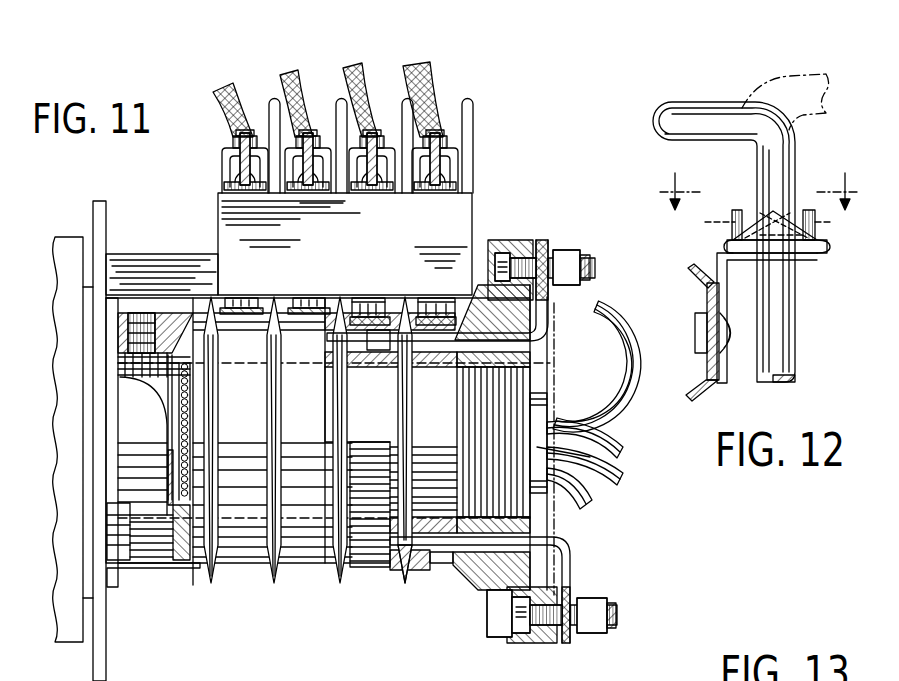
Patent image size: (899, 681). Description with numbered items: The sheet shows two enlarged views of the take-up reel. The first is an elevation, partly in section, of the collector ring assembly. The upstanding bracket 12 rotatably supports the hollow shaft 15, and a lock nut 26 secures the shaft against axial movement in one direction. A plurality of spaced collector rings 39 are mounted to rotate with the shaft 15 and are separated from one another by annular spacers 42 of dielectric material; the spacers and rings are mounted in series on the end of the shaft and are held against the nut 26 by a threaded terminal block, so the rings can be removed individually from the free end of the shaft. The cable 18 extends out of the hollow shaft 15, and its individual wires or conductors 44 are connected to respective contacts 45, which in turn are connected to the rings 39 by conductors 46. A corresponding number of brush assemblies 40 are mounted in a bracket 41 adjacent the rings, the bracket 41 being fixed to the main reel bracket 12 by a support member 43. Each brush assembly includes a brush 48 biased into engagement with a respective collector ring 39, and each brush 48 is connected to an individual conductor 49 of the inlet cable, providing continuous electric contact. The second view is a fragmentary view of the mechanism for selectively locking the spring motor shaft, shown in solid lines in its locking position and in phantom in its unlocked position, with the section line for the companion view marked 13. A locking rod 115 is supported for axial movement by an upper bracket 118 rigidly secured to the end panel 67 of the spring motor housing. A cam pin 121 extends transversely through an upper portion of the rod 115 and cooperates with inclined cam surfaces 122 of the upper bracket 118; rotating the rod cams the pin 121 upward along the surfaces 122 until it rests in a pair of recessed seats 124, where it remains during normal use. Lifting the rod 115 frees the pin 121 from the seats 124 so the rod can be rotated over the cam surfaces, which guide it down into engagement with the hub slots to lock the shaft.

In FIG. 11, the bracket 12 is at (58, 262).
In FIG. 11, the support member 43 is at (158, 262).
In FIG. 11, the brush assemblies 40 is at (296, 148).
In FIG. 11, the conductor 49 is at (408, 80).
In FIG. 11, the bracket 41 is at (457, 232).
In FIG. 11, the brush 48 is at (432, 309).
In FIG. 11, the contacts 45 is at (552, 243).
In FIG. 11, the conductors 46 is at (538, 339).
In FIG. 11, the hollow shaft 15 is at (508, 388).
In FIG. 11, the wires or conductors 44 is at (608, 443).
In FIG. 11, the cable 18 is at (578, 464).
In FIG. 11, the lock nut 26 is at (148, 570).
In FIG. 11, the collector rings 39 is at (237, 572).
In FIG. 11, the annular spacers 42 is at (267, 592).
In FIG. 12, the locking rod 115 is at (730, 104).
In FIG. 12, the section line 13- 13 is at (754, 181).
In FIG. 12, the recessed seats 124 is at (760, 212).
In FIG. 12, the inclined cam surfaces 122 is at (767, 229).
In FIG. 12, the upper bracket 118 is at (715, 254).
In FIG. 12, the cam pin 121 is at (826, 256).
In FIG. 12, the end panel 67 is at (708, 392).